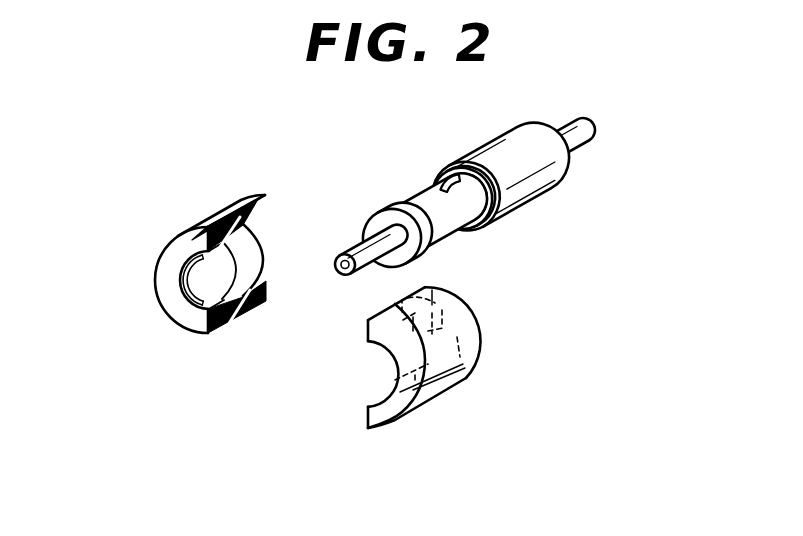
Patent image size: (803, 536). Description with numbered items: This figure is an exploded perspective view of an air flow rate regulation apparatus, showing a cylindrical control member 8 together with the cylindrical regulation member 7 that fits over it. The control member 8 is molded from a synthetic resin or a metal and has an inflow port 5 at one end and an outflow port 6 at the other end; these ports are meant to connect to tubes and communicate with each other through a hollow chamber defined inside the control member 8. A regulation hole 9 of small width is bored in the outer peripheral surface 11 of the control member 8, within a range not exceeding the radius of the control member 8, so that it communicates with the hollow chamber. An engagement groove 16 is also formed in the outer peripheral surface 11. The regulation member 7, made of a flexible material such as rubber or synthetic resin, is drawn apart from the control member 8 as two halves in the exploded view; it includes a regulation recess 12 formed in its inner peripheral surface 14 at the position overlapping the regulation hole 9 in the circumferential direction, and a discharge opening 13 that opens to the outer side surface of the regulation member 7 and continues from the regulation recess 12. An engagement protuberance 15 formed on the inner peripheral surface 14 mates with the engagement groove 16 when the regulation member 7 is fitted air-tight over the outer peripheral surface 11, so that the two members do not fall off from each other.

The inflow port 5 is at (360, 243).
The outflow port 6 is at (584, 141).
The regulation member 7 is at (297, 311).
The control member 8 is at (527, 207).
The regulation hole 9 is at (450, 176).
The outer peripheral surface 11 is at (458, 225).
The regulation recess 12 is at (222, 313).
The discharge opening 13 is at (243, 222).
The inner peripheral surface 14 is at (196, 279).
The engagement protuberance 15 is at (204, 309).
The engagement groove 16 is at (401, 207).